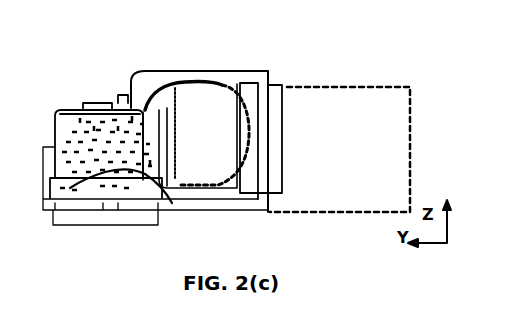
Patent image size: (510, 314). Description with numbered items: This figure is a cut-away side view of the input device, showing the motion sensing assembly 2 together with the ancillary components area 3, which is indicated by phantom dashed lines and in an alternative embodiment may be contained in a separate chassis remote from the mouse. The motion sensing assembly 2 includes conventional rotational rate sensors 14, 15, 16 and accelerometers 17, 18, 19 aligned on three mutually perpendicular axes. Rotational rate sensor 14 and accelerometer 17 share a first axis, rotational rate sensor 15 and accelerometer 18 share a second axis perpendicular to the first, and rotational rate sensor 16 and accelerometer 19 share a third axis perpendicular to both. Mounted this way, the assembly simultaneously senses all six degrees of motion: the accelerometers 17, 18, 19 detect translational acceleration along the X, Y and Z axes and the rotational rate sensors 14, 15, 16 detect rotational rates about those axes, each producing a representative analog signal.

The motion sensing assembly 2 is at (43, 155).
The ancillary components area 3 is at (345, 87).
The rotational rate sensor 14 is at (165, 84).
The rotational rate sensor 15 is at (237, 82).
The rotational rate sensor 16 is at (75, 105).
The accelerometer 17 is at (55, 178).
The accelerometer 18 is at (102, 100).
The accelerometer 19 is at (172, 203).